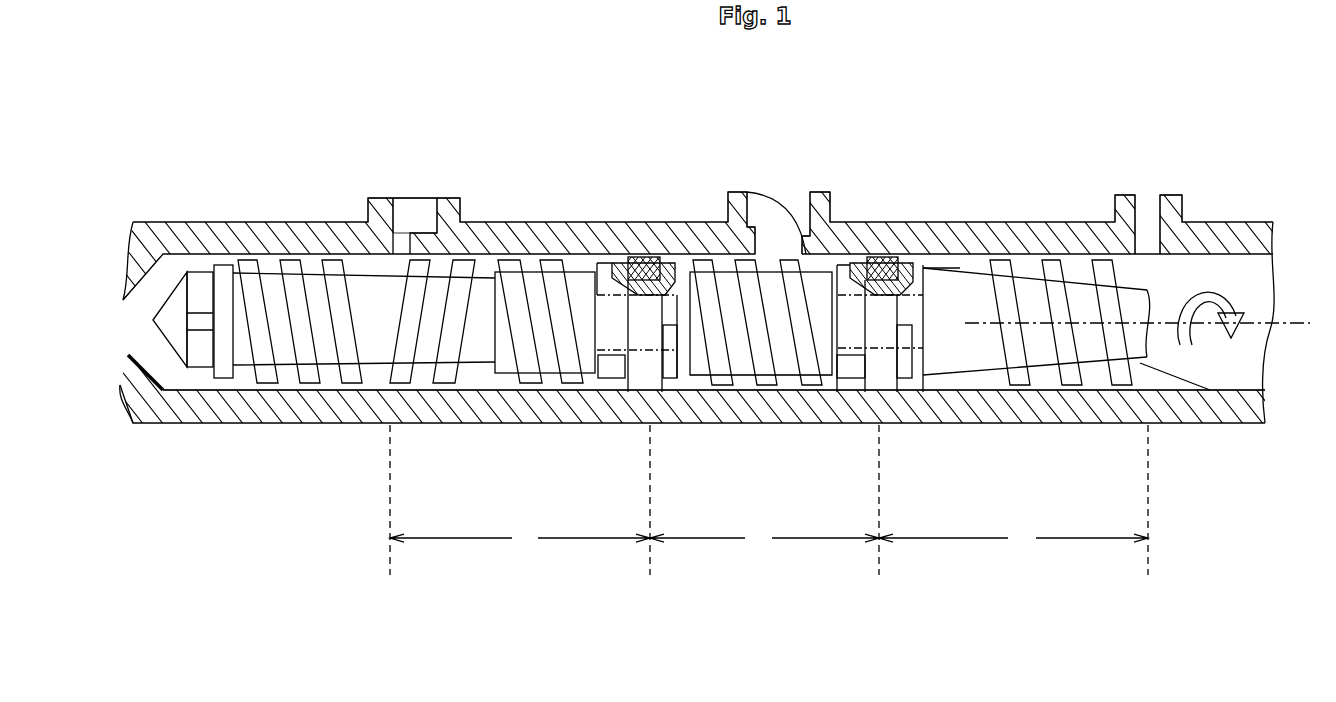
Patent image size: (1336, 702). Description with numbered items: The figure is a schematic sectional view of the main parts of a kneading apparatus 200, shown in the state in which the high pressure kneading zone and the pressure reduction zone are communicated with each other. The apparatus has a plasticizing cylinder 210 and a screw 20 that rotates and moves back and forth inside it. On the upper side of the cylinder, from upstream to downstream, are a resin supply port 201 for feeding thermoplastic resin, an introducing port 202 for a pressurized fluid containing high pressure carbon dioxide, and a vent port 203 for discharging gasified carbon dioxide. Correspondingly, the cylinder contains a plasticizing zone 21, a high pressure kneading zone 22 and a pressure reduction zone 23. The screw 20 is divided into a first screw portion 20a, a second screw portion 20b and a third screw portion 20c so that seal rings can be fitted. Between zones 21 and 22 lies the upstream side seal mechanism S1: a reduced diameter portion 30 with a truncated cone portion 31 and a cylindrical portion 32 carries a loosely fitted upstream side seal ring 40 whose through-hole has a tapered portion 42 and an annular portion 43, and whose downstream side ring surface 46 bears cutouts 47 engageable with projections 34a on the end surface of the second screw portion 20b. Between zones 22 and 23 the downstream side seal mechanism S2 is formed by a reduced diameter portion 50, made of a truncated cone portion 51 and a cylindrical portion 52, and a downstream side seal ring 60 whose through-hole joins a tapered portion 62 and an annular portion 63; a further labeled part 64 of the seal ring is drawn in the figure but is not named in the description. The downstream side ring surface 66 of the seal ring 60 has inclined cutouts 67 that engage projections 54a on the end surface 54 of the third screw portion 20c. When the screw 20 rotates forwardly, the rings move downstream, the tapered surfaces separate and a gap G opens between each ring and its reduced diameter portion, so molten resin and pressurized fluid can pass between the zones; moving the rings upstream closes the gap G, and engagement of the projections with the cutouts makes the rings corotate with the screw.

The kneading apparatus 200 is at (237, 162).
The screw 20 is at (1212, 424).
The plasticizing cylinder 210 is at (268, 424).
The third screw portion 20c is at (322, 222).
The vent port 203 is at (418, 222).
The introducing port 202 is at (757, 192).
The second screw portion 20b is at (803, 232).
The resin supply port 201 is at (1147, 225).
The first screw portion 20a is at (1028, 280).
The pressure reduction zone 23 is at (520, 500).
The high pressure kneading zone 22 is at (764, 500).
The plasticizing zone 21 is at (1013, 500).
The annular portion 63 is at (595, 268).
The downstream side ring surface 66 is at (598, 262).
The downstream side seal mechanism S2 is at (652, 213).
The reduced diameter portion 50 is at (642, 262).
The downstream side seal ring 60 is at (673, 262).
The gap G is at (678, 285).
The cutouts 67 is at (612, 352).
The projections 54a is at (604, 362).
The end surface 54 is at (662, 378).
The cylindrical portion 52 is at (630, 380).
The truncated cone portion 51 is at (675, 380).
The screw root 64 is at (692, 378).
The tapered portion 62 is at (730, 385).
The cutouts 47 is at (778, 378).
The projections 34a is at (850, 378).
The cylindrical portion 32 is at (866, 385).
The annular portion 43 is at (905, 378).
The downstream side ring surface 46 is at (840, 265).
The upstream side seal mechanism S1 is at (896, 213).
The reduced diameter portion 30 is at (892, 263).
The upstream side seal ring 40 is at (902, 262).
The tapered portion 42 is at (928, 280).
The truncated cone portion 31 is at (950, 370).